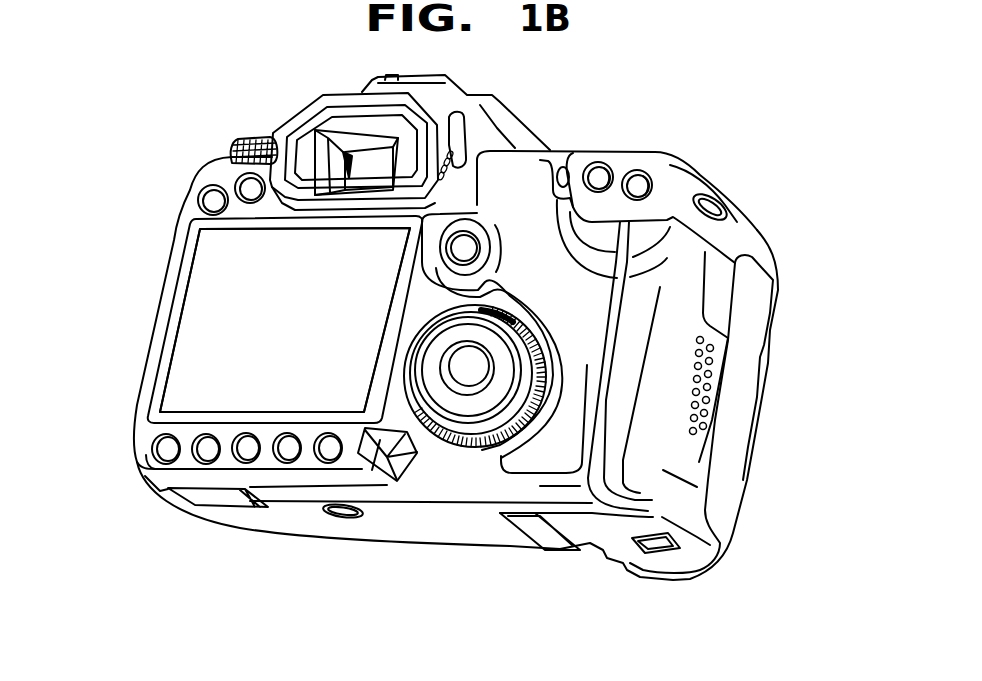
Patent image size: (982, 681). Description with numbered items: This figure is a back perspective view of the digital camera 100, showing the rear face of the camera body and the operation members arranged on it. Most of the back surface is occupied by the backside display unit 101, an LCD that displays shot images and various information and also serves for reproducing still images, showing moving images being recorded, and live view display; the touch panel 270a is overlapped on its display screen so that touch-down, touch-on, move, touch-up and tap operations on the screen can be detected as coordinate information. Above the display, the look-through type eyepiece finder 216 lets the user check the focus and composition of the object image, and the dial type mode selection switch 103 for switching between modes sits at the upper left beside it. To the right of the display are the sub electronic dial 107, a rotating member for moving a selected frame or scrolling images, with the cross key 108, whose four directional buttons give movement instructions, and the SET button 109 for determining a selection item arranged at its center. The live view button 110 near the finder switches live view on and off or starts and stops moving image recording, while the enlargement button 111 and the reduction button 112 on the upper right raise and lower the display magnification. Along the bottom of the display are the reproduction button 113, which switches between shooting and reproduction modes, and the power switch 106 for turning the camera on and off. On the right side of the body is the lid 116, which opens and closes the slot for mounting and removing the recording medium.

The digital camera 100 is at (760, 131).
The backside display unit 101 is at (230, 307).
The touch panel 270a is at (230, 307).
The mode selection switch 103 is at (243, 135).
The power switch 106 is at (392, 470).
The sub electronic dial 107 is at (433, 442).
The cross key 108 is at (450, 407).
The SET button 109 is at (468, 367).
The live view button 110 is at (463, 245).
The enlargement button 111 is at (634, 178).
The reduction button 112 is at (597, 165).
The reproduction button 113 is at (320, 460).
The lid 116 is at (678, 352).
The eyepiece finder 216 is at (361, 180).